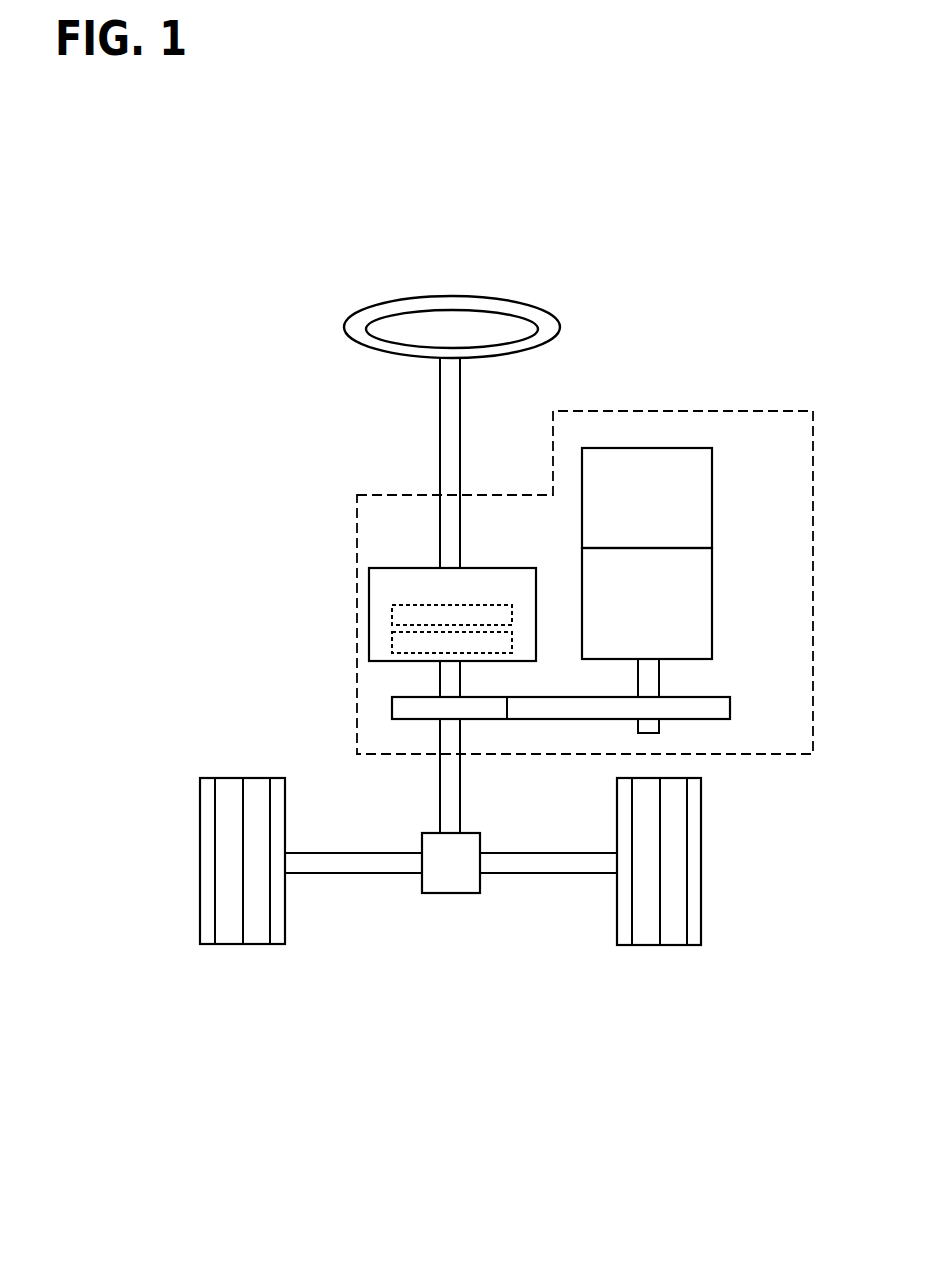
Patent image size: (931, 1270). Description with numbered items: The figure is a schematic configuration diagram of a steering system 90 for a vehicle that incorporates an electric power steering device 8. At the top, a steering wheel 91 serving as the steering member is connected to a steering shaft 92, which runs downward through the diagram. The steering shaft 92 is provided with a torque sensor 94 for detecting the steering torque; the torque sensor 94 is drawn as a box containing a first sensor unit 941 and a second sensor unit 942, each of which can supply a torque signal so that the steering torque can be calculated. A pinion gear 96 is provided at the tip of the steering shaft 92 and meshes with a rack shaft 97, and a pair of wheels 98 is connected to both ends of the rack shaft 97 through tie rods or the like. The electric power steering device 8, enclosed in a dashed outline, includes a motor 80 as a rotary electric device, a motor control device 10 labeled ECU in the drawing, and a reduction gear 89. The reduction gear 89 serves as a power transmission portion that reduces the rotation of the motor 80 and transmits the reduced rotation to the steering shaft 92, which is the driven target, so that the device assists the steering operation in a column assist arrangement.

The electric power steering device 8 is at (753, 411).
The motor control device 10 is at (712, 478).
The motor 80 is at (712, 583).
The reduction gear 89 is at (730, 706).
The steering system 90 is at (419, 1042).
The steering wheel 91 is at (343, 330).
The steering shaft 92 is at (440, 415).
The torque sensor 94 is at (390, 568).
The first sensor unit 941 is at (392, 614).
The second sensor unit 942 is at (392, 648).
The pinion gear 96 is at (442, 893).
The rack shaft 97 is at (345, 873).
The wheels 98 is at (258, 944).